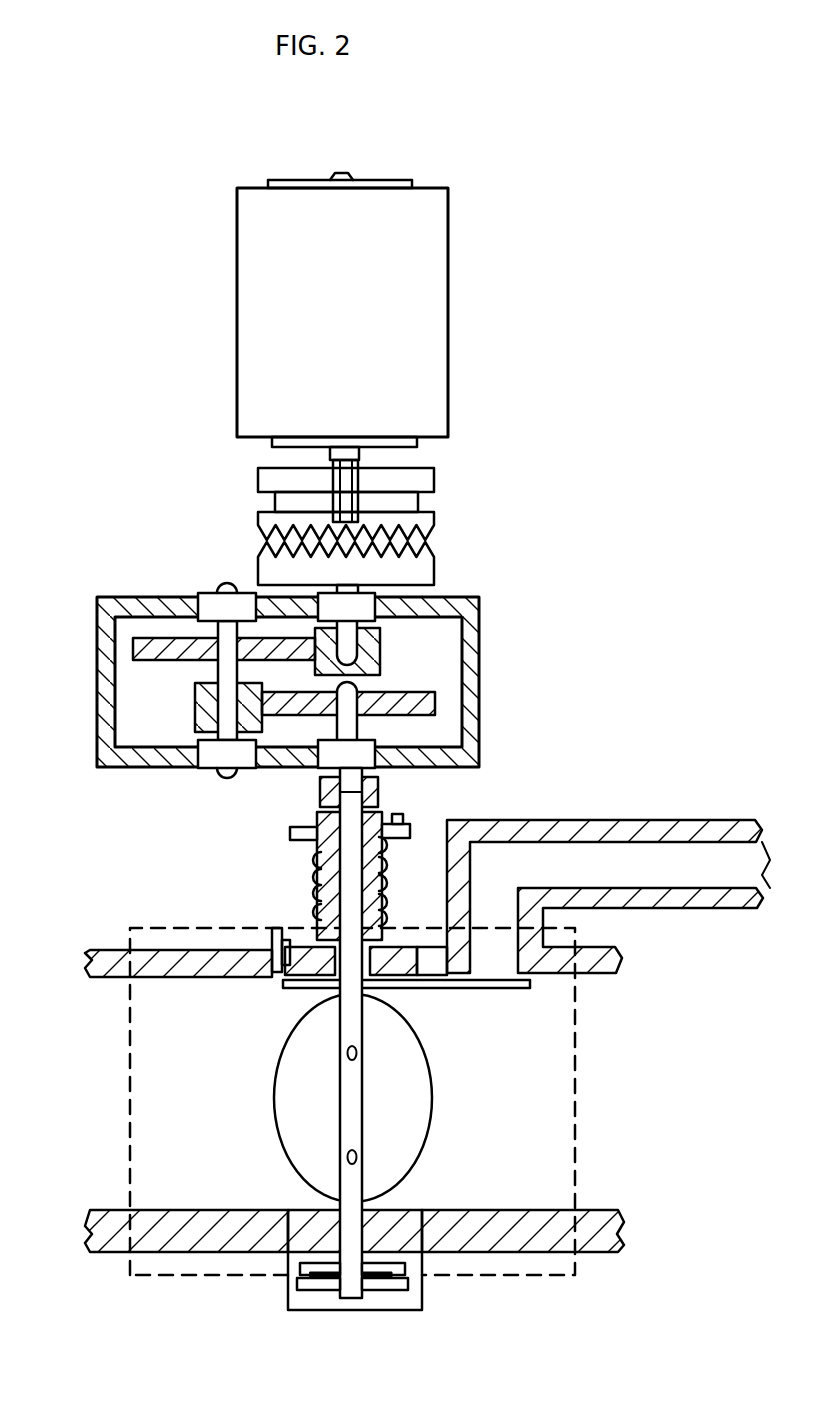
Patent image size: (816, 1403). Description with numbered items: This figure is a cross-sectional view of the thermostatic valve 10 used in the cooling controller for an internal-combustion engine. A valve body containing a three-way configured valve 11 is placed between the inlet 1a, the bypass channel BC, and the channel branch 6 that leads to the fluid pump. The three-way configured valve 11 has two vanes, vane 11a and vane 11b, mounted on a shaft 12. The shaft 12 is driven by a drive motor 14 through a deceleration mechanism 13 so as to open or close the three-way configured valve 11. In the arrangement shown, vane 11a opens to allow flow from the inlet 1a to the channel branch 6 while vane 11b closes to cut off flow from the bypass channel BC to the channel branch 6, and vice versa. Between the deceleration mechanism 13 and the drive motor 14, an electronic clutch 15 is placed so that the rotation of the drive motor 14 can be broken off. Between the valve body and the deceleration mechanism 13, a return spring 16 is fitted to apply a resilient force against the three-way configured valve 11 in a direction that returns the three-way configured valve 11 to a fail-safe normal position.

The thermostatic valve 10 is at (407, 166).
The drive motor 14 is at (430, 280).
The electronic clutch 15 is at (436, 546).
The deceleration mechanism 13 is at (481, 679).
The bypass channel BC is at (600, 862).
The return spring 16 is at (300, 876).
The inlet 1a is at (198, 1185).
The channel branch 6 is at (512, 1185).
The 3-way configured valve 11 is at (128, 1032).
The vane 11b is at (508, 990).
The vane 11a is at (410, 1126).
The shaft 12 is at (352, 1092).